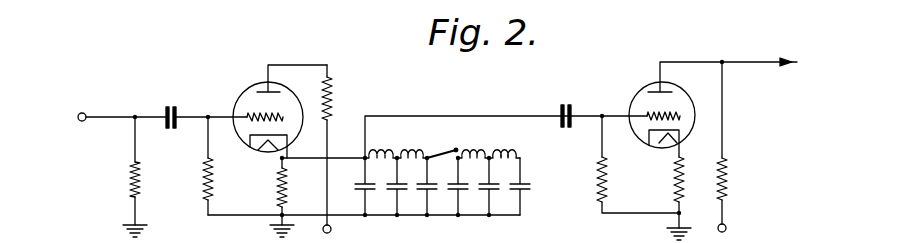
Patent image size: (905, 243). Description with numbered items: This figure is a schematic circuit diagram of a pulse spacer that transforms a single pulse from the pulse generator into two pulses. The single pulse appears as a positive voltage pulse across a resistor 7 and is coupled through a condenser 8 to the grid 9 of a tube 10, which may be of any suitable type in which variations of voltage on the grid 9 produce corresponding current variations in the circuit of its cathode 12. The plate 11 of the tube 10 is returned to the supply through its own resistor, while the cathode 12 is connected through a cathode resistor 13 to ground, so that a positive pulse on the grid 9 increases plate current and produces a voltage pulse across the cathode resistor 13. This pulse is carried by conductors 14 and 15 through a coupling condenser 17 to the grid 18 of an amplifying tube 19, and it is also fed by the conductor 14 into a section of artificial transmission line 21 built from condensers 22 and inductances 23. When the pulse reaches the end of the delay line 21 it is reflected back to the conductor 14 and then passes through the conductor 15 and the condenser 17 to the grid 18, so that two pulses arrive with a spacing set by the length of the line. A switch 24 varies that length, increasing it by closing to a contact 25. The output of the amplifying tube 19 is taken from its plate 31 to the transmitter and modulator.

The resistor 7 is at (128, 182).
The condenser 8 is at (171, 130).
The grid 9 is at (251, 120).
The tube 10 is at (241, 88).
The plate of first tube 11 is at (265, 76).
The cathode 12 is at (292, 138).
The cathode resistor 13 is at (278, 196).
The conductor 14 is at (343, 157).
The conductor 15 is at (432, 116).
The condenser 17 is at (572, 104).
The grid 18 is at (648, 119).
The amplifying tube 19 is at (641, 83).
The artificial transmission line 21 is at (442, 217).
The condensers 22 is at (373, 185).
The inductances 23 is at (390, 153).
The switch 24 is at (447, 151).
The contact 25 is at (470, 154).
The plate 31 is at (673, 93).